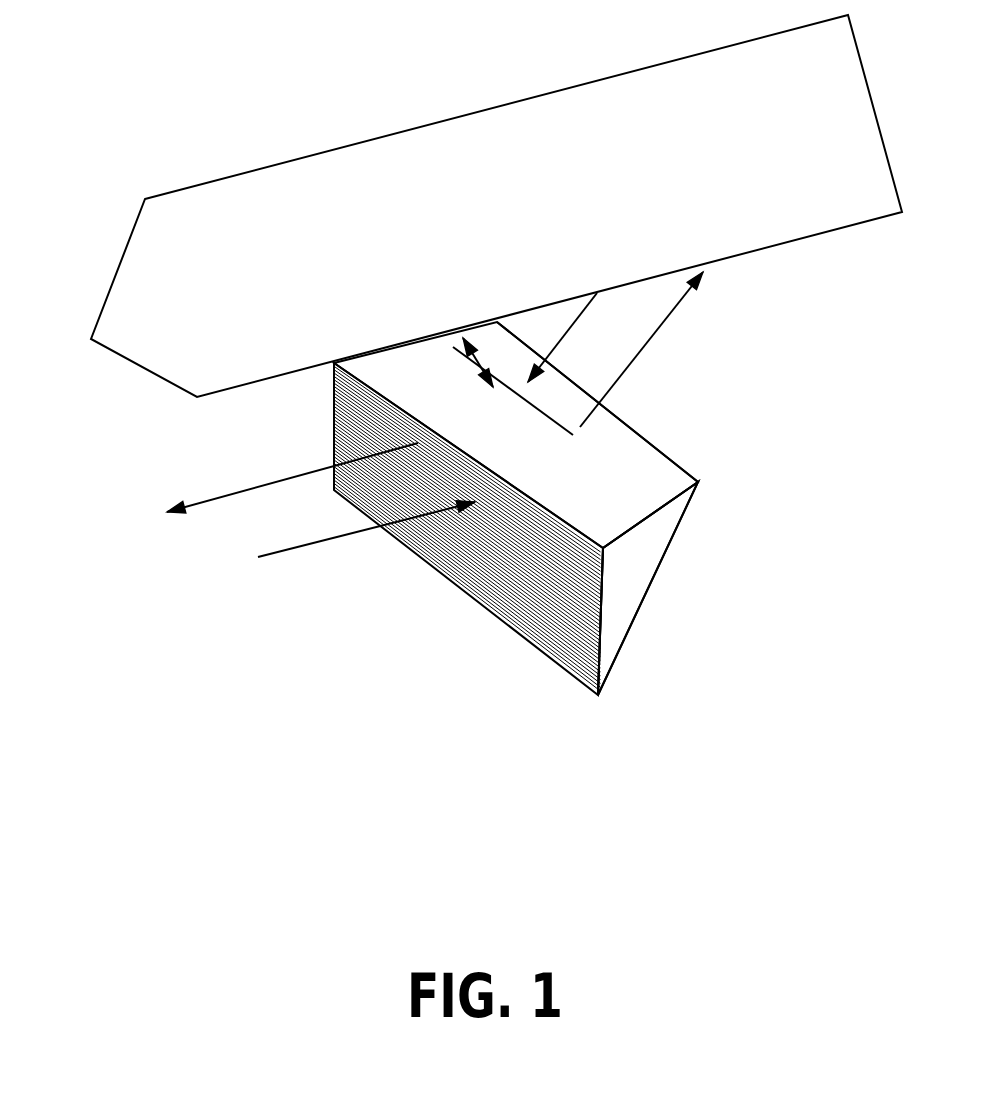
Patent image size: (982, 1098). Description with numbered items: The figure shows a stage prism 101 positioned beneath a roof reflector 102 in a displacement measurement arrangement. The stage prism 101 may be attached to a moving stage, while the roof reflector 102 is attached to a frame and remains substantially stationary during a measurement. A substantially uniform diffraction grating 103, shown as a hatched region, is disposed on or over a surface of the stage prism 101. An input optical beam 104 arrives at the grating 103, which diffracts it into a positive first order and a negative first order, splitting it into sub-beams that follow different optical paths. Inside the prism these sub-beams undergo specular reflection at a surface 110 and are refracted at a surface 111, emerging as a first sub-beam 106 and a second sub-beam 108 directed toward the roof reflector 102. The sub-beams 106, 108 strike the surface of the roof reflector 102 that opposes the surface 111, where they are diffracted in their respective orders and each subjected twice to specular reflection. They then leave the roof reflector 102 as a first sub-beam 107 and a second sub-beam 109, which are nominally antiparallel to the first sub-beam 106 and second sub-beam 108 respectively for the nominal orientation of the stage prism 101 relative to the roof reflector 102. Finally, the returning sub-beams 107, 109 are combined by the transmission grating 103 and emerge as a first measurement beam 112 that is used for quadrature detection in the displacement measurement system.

The stage prism 101 is at (727, 515).
The roof reflector 102 is at (115, 277).
The diffraction grating 103 is at (505, 573).
The input optical beam 104 is at (317, 543).
The first sub-beam 106 is at (665, 320).
The first sub-beam 107 is at (579, 317).
The second sub-beam 108 is at (540, 413).
The second sub-beam 109 is at (476, 362).
The surface 110 is at (660, 567).
The surface 111 is at (663, 470).
The first measurement beam 112 is at (229, 494).